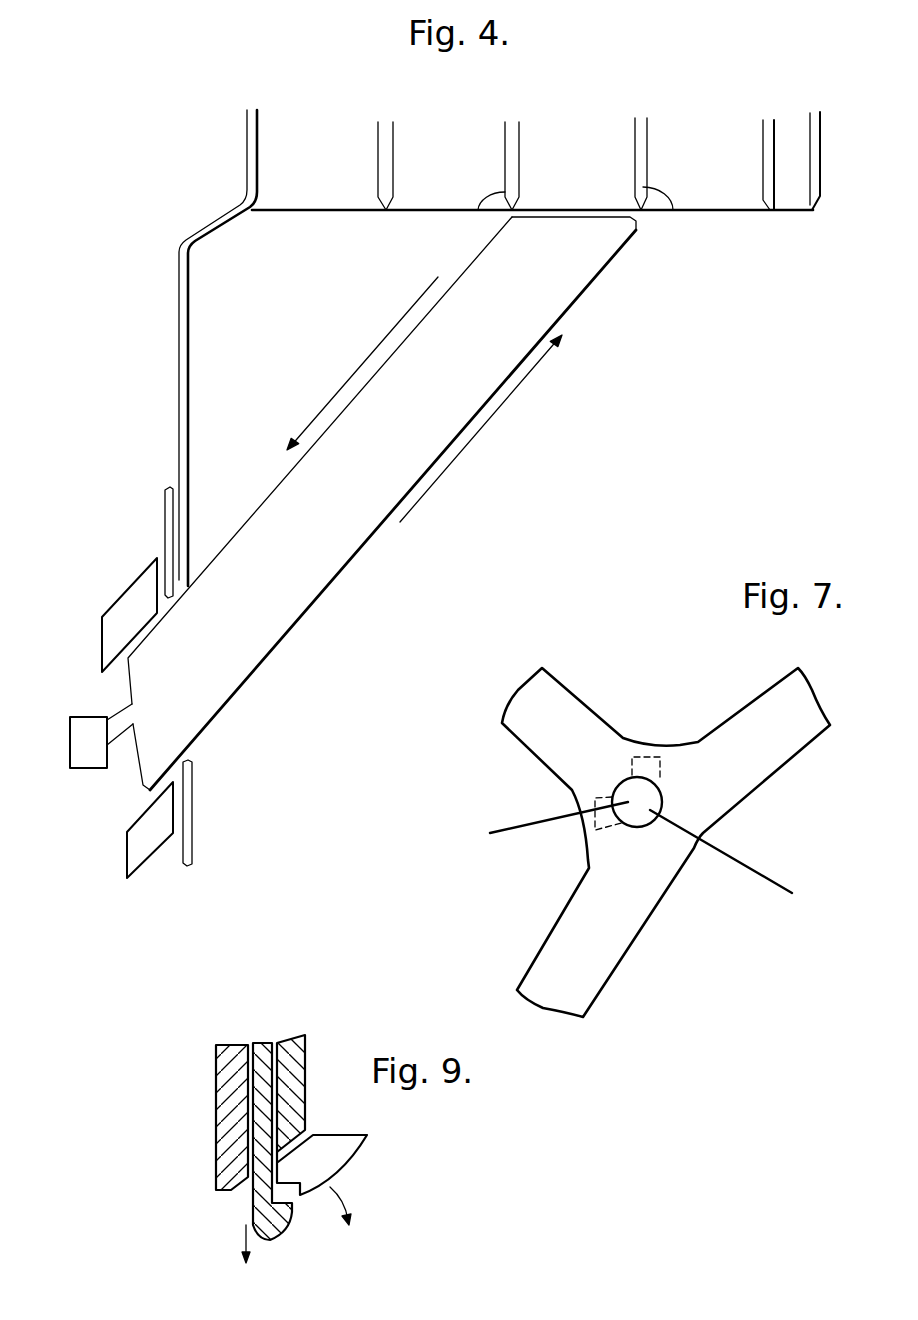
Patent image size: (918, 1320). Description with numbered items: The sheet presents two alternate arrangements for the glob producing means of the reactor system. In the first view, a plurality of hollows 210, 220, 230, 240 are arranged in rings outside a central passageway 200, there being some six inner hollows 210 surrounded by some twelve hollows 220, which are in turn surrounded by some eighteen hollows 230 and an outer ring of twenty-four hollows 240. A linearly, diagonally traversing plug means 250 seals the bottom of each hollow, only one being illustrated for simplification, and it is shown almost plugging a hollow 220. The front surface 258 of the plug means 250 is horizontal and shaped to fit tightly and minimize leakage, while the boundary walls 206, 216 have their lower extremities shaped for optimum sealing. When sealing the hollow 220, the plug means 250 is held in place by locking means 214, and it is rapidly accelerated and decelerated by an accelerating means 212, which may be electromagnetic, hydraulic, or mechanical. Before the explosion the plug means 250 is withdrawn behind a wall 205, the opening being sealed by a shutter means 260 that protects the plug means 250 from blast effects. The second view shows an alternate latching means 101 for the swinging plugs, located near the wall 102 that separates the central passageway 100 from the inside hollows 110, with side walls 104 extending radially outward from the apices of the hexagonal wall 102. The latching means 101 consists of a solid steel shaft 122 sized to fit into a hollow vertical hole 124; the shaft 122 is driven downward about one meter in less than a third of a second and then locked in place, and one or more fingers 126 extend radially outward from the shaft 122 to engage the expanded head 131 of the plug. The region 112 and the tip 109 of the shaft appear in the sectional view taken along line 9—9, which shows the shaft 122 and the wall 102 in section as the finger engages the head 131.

In FIG. 4, the central passageway 200 is at (788, 142).
In FIG. 4, the wall 205 is at (188, 373).
In FIG. 4, the boundary wall 206 is at (678, 214).
In FIG. 4, the hollows 210 is at (690, 163).
In FIG. 4, the accelerating means 212 is at (77, 717).
In FIG. 4, the locking means 214 is at (107, 627).
In FIG. 4, the boundary wall 216 is at (468, 213).
In FIG. 4, the hollows 220 is at (560, 163).
In FIG. 4, the hollows 230 is at (430, 163).
In FIG. 4, the hollows 240 is at (293, 163).
In FIG. 4, the plug means 250 is at (405, 398).
In FIG. 4, the front surface 258 is at (593, 215).
In FIG. 4, the shutter means 260 is at (165, 488).
In FIG. 7, the section line 9— 9 is at (487, 841).
In FIG. 7, the latching means 101 is at (638, 836).
In FIG. 9, the latching means 101 is at (263, 1165).
In FIG. 7, the wall 102 is at (548, 973).
In FIG. 9, the wall 102 is at (237, 1042).
In FIG. 7, the side wall 104 is at (535, 729).
In FIG. 7, the inside hollows 110 is at (413, 930).
In FIG. 7, the upper region 112 is at (658, 651).
In FIG. 7, the solid shaft 122 is at (628, 823).
In FIG. 7, the hollow vertical hole 124 is at (657, 797).
In FIG. 7, the fingers 126 is at (645, 750).
In FIG. 9, the central passageway 100 is at (183, 1098).
In FIG. 9, the tip 109 is at (280, 1212).
In FIG. 9, the expanded head portion 131 is at (297, 1172).